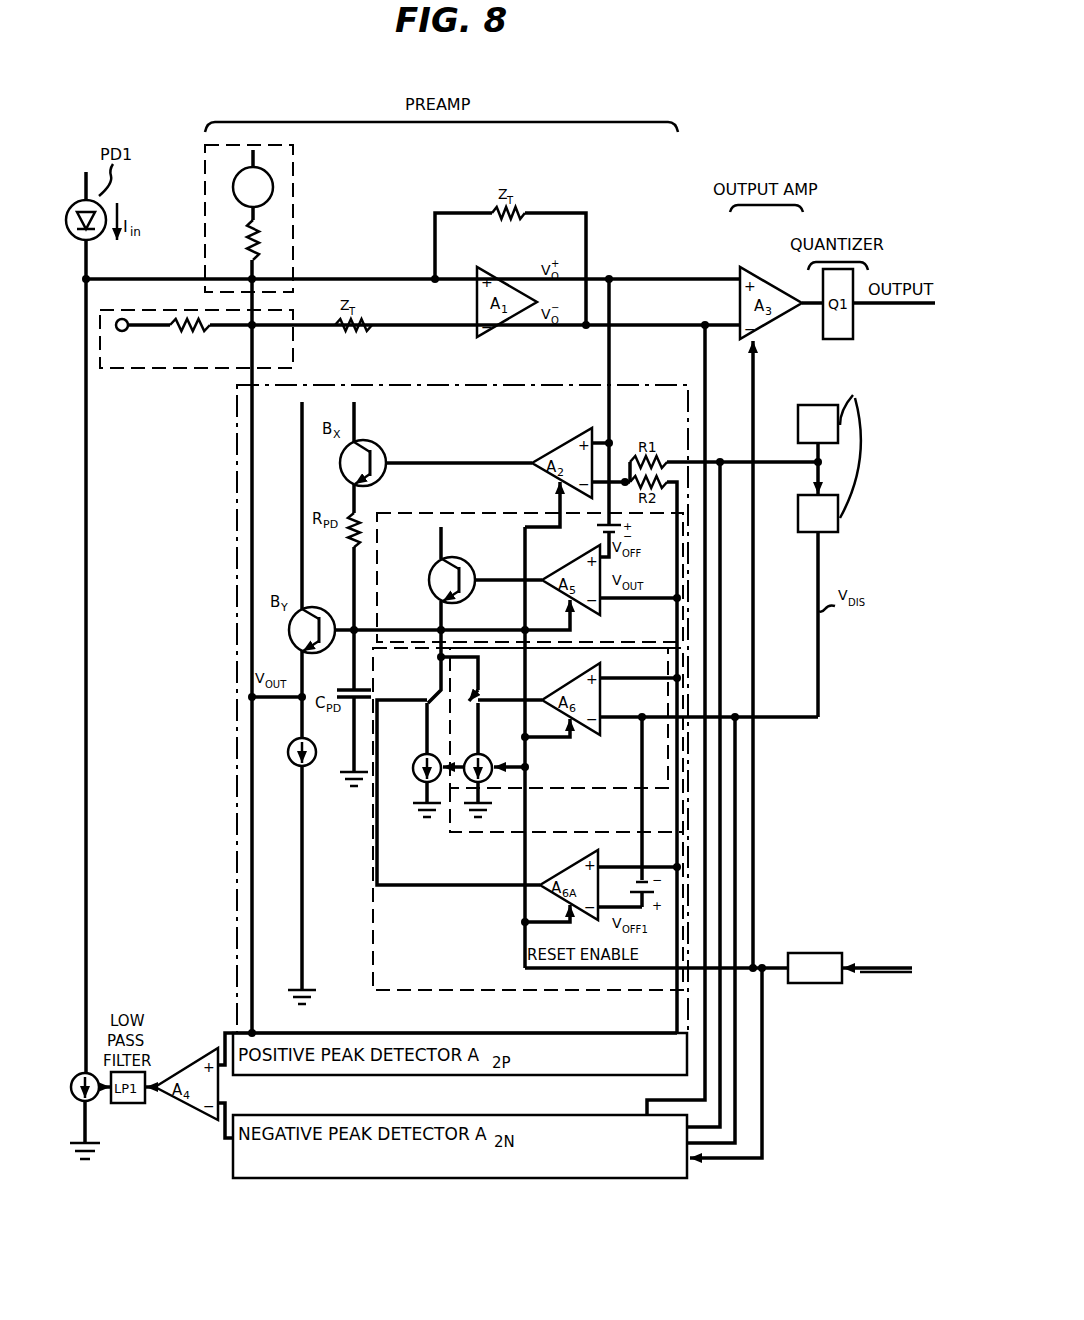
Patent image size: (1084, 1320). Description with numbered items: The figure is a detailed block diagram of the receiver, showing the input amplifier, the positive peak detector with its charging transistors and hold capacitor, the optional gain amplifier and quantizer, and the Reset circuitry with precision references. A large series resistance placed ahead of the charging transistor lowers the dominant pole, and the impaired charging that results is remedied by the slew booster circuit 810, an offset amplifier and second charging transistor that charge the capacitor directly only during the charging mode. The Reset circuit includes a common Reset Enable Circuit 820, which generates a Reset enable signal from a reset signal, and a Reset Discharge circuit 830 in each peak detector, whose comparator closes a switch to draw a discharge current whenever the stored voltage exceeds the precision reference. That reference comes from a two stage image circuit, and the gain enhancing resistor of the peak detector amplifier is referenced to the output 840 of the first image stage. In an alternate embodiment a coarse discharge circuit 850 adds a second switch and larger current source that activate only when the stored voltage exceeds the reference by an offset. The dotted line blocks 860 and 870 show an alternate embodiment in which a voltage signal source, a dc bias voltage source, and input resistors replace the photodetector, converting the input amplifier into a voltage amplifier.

The slew booster circuit 810 is at (472, 512).
The Reset Enable Circuit 820 is at (808, 984).
The Reset Discharge circuit 830 is at (591, 790).
The output of the first image stage 840 is at (764, 462).
The coarse discharge circuit 850 is at (591, 990).
The dotted line block 860 is at (294, 184).
The dotted line block 870 is at (168, 368).